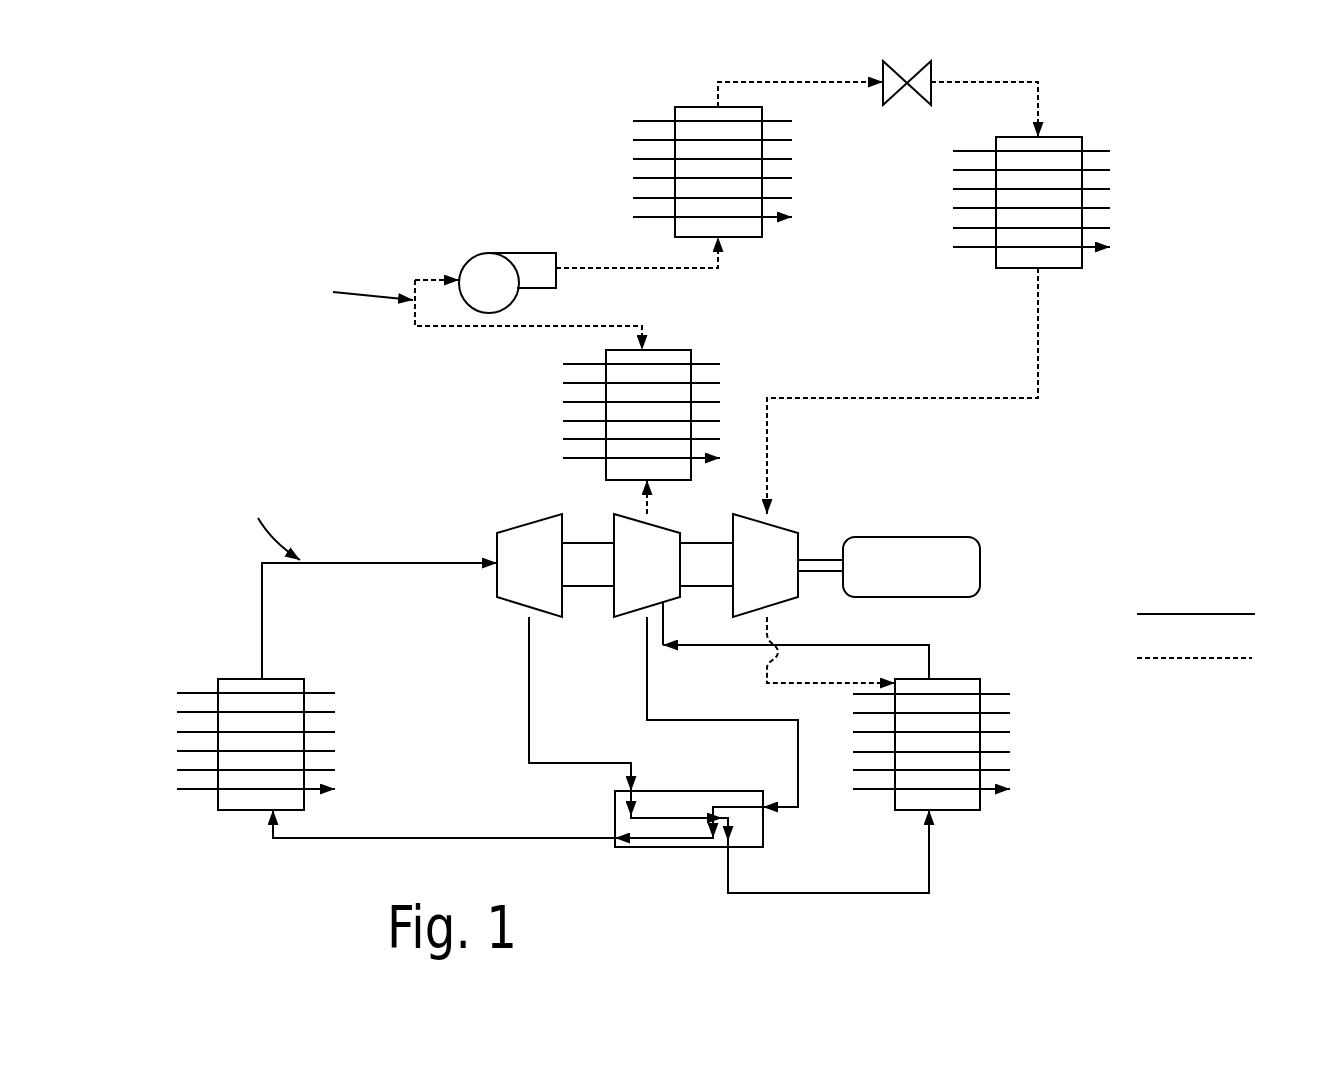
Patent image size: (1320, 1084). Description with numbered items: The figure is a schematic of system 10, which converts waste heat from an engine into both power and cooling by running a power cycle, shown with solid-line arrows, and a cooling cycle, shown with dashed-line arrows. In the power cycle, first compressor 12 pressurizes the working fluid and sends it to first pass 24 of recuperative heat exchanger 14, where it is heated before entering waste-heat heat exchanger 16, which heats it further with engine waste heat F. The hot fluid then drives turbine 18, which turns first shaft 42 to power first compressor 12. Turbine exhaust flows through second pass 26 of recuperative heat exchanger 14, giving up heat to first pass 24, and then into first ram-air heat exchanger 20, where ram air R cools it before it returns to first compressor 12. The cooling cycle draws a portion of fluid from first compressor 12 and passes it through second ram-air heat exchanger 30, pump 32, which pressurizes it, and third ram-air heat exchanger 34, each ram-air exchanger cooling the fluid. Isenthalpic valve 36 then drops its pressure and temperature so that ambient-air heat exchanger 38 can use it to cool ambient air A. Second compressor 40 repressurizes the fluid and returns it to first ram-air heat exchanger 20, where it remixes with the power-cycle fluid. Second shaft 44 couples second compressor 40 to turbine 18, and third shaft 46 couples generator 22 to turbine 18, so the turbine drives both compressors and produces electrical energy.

The system 10 is at (699, 476).
The first compressor 12 is at (632, 580).
The recuperative heat exchanger 14 is at (768, 838).
The waste-heat heat exchanger 16 is at (218, 679).
The turbine 18 is at (514, 580).
The first ram-air heat exchanger 20 is at (980, 810).
The generator 22 is at (896, 580).
The first pass 24 is at (665, 847).
The second pass 26 is at (672, 818).
The second ram-air heat exchanger 30 is at (606, 480).
The pump 32 is at (474, 297).
The third ram-air heat exchanger 34 is at (675, 107).
The isenthalpic valve 36 is at (893, 97).
The ambient-air heat exchanger 38 is at (1082, 268).
The second compressor 40 is at (750, 580).
The first shaft 42 is at (573, 580).
The second shaft 44 is at (691, 580).
The third shaft 46 is at (822, 558).